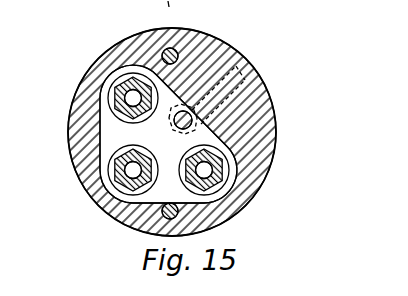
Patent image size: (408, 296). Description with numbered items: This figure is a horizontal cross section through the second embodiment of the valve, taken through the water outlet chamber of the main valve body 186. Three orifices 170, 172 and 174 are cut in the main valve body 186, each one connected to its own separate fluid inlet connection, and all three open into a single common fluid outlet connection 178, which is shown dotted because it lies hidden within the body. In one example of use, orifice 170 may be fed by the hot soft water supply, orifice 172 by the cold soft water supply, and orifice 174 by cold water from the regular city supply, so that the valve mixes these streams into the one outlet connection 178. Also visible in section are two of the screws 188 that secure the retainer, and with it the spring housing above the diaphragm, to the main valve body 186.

The orifice 170 is at (131, 97).
The orifice 172 is at (131, 171).
The orifice 174 is at (206, 169).
The fluid outlet connection 178 is at (250, 76).
The main valve body 186 is at (272, 130).
The screws 188 is at (177, 50).